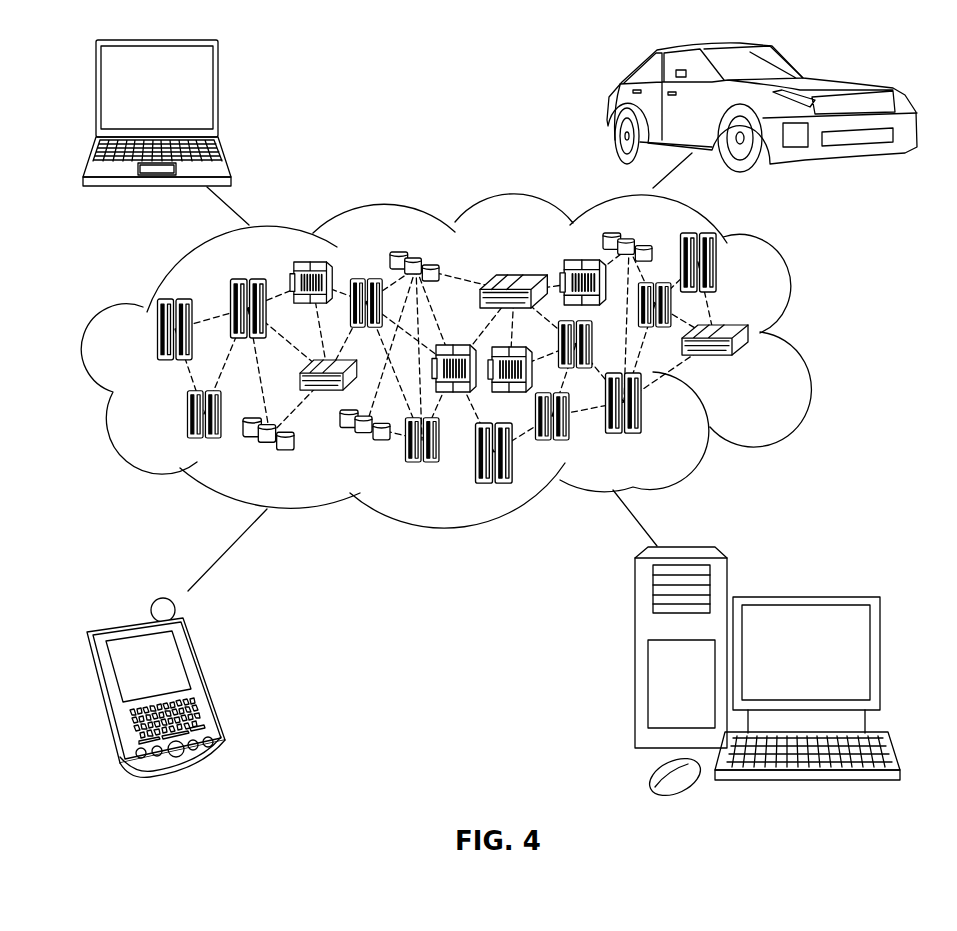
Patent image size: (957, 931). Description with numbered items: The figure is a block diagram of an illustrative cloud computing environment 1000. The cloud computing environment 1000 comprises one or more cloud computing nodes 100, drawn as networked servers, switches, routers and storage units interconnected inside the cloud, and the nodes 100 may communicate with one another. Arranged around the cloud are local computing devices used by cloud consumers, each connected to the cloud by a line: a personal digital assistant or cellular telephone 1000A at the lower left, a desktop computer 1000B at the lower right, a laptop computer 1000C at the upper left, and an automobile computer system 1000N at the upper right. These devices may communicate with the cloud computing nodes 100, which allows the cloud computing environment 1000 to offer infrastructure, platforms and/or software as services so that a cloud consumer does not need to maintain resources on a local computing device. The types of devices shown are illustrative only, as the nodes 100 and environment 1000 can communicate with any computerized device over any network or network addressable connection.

The cloud computing nodes 100 is at (757, 366).
The cloud computing environment 1000 is at (800, 341).
The personal digital assistant (PDA) or cellular telephone 1000A is at (212, 679).
The desktop computer 1000B is at (805, 596).
The laptop computer 1000C is at (218, 93).
The automobile computer system 1000N is at (610, 108).